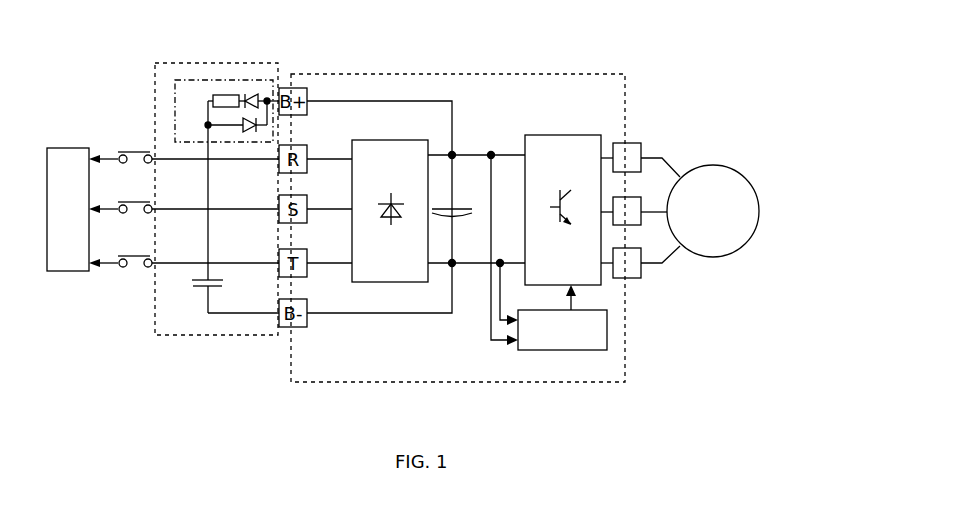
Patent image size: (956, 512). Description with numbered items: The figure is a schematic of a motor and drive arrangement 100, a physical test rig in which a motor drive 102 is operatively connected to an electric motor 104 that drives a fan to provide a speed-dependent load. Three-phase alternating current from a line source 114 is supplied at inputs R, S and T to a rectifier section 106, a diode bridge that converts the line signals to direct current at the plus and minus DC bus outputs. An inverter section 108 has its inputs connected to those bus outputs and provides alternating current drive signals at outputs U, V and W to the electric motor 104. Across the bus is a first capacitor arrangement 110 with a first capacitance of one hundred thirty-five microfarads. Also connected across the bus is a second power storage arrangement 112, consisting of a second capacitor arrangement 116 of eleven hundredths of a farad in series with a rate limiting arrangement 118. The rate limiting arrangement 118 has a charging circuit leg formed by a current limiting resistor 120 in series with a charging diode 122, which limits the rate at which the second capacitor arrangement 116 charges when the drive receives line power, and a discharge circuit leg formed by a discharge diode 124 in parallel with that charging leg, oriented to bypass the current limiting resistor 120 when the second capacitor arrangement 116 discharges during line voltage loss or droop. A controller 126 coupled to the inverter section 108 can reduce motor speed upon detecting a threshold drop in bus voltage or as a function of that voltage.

The motor and drive arrangement 100 is at (630, 50).
The motor drive 102 is at (233, 337).
The electric motor 104 is at (759, 186).
The rectifier section 106 is at (375, 283).
The inverter section 108 is at (601, 285).
The first capacitor arrangement 110 is at (443, 215).
The second power storage arrangement 112 is at (155, 329).
The line source 114 is at (68, 271).
The second capacitor arrangement 116 is at (197, 288).
The rate limiting arrangement 118 is at (175, 142).
The current limiting resistor 120 is at (212, 93).
The charging diode 122 is at (256, 97).
The discharge diode 124 is at (210, 112).
The controller 126 is at (607, 335).